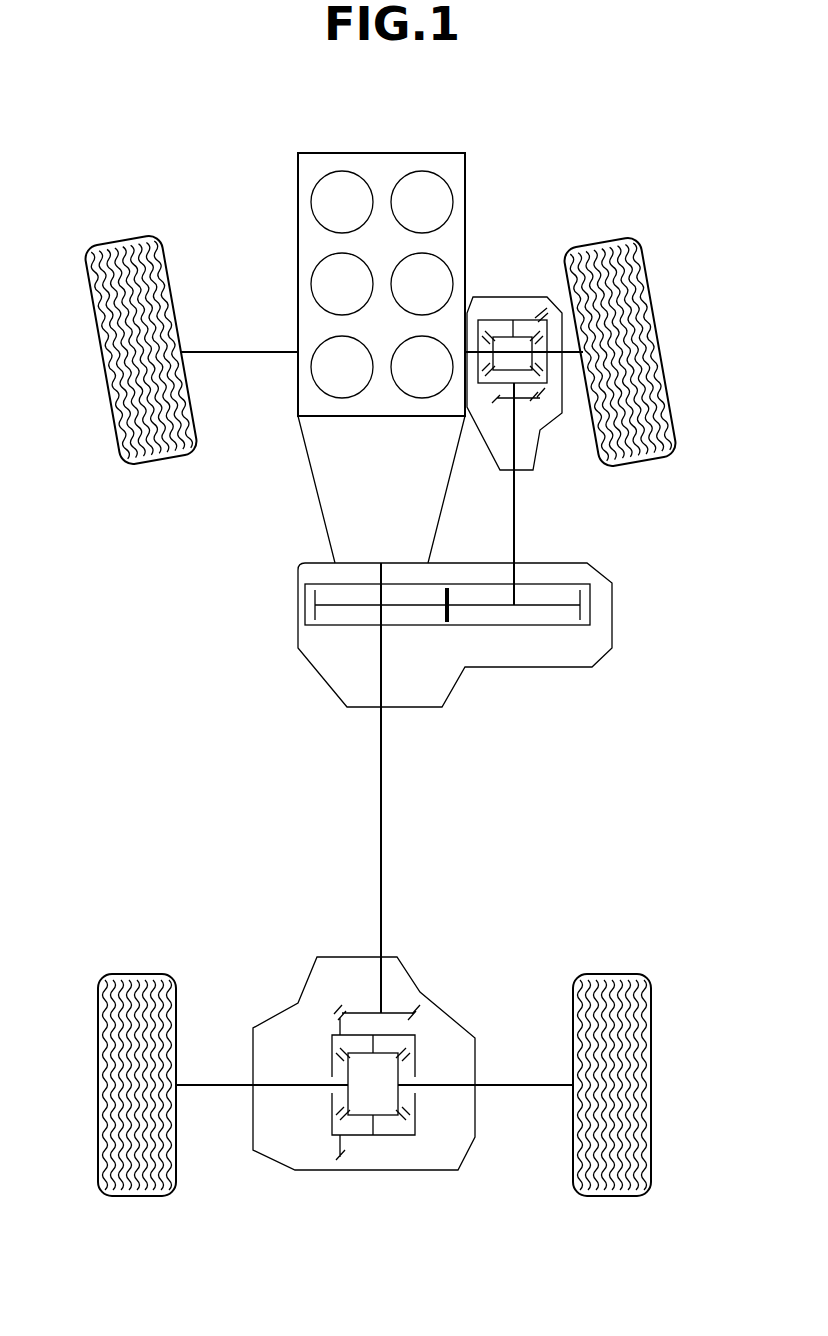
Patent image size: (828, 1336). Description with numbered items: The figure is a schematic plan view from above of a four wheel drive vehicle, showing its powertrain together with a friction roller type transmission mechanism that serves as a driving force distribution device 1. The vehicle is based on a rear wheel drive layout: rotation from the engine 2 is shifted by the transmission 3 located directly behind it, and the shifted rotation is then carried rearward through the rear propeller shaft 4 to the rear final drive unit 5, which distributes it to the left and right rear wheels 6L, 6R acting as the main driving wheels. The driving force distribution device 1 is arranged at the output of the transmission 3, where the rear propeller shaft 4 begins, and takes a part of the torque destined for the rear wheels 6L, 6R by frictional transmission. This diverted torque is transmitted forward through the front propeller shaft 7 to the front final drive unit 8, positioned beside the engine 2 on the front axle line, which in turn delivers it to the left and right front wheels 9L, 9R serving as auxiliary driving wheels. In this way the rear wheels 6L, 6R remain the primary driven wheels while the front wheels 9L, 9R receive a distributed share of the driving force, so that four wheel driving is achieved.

The driving force distribution device 1 is at (622, 605).
The engine 2 is at (298, 170).
The transmission 3 is at (310, 460).
The rear propeller shaft 4 is at (383, 790).
The rear final drive unit 5 is at (452, 1004).
The left rear wheel 6L is at (140, 1200).
The right rear wheel 6R is at (612, 1200).
The front propeller shaft 7 is at (517, 530).
The front final drive unit 8 is at (518, 286).
The left front wheel 9L is at (122, 238).
The right front wheel 9R is at (608, 240).